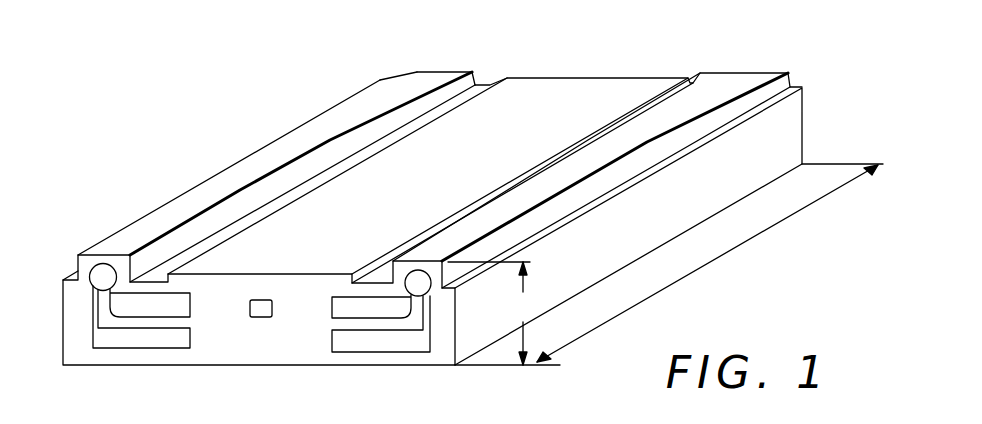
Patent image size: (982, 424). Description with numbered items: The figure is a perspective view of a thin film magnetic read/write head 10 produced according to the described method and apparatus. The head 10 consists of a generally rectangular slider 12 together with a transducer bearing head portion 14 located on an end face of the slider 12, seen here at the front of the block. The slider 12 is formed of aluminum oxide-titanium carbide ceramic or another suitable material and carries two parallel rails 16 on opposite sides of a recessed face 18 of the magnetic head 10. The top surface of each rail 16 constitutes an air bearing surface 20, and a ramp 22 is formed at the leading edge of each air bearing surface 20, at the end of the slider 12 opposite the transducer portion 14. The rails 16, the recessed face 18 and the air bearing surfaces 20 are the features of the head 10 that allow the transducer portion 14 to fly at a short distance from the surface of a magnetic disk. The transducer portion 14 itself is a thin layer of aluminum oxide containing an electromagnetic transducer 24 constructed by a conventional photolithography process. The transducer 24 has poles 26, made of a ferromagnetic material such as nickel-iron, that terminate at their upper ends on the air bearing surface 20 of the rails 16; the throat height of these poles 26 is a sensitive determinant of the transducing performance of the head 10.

The magnetic read/write head 10 is at (217, 120).
The slider 12 is at (793, 125).
The transducer bearing head portion 14 is at (440, 345).
The rails 16 is at (75, 277).
The recessed face 18 is at (577, 85).
The air bearing surface 20 is at (318, 123).
The ramp 22 is at (415, 78).
The electromagnetic transducer 24 is at (338, 336).
The poles 26 is at (102, 263).